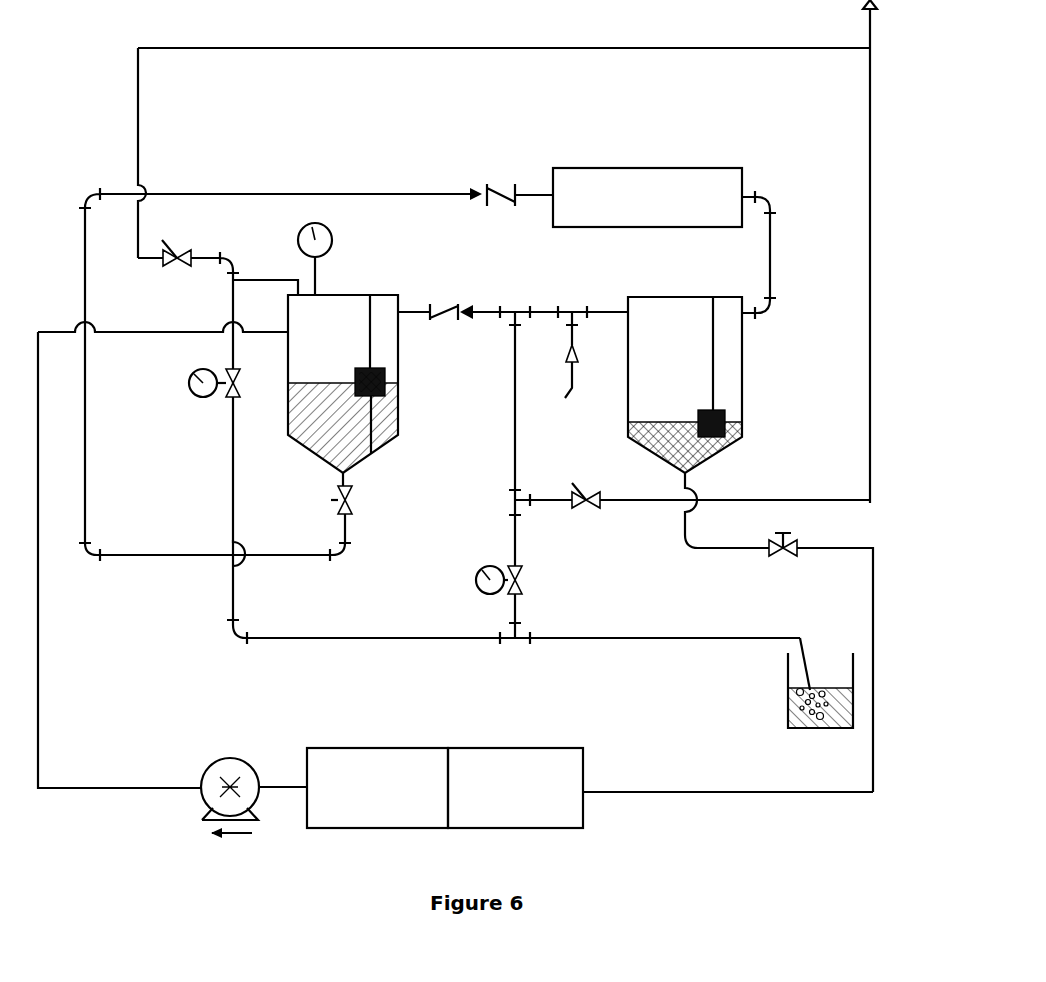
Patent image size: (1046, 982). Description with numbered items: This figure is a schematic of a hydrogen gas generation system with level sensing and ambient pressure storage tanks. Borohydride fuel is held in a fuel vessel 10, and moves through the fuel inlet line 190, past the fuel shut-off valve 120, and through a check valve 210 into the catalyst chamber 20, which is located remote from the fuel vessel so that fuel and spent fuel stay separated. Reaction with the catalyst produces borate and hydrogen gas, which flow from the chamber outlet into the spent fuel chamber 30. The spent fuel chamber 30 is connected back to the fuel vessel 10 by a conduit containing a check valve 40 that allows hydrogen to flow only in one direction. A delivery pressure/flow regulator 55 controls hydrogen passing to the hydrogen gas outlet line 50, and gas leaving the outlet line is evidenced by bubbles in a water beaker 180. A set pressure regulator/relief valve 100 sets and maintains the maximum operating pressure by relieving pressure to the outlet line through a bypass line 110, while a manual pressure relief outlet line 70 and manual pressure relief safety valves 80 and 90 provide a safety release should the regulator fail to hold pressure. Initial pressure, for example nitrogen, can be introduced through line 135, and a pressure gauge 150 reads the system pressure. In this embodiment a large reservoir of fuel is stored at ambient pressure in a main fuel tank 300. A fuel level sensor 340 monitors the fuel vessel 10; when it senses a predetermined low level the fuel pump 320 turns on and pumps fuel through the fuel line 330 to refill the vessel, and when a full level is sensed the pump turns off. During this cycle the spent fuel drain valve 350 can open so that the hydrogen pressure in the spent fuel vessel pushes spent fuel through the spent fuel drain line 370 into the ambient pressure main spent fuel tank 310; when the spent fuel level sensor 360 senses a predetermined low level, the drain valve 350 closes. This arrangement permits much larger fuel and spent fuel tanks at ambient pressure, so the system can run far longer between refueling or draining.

The fuel vessel 10 is at (408, 430).
The catalyst chamber 20 is at (628, 158).
The spent fuel chamber 30 is at (755, 370).
The check valve 40 is at (444, 298).
The hydrogen gas outlet line 50 is at (814, 648).
The delivery pressure/flow regulator 55 is at (530, 577).
The manual pressure relief outlet line 70 is at (856, 22).
The manual pressure relief safety valve 80 is at (192, 245).
The manual pressure relief safety valve 90 is at (594, 513).
The set pressure regulator/relief valve 100 is at (222, 407).
The bypass line 110 is at (438, 642).
The fuel shut-off valve 120 is at (362, 512).
The line 135 is at (560, 376).
The pressure gauge 150 is at (336, 232).
The water beaker 180 is at (778, 707).
The fuel inlet line 190 is at (188, 567).
The check valve 210 is at (502, 174).
The main fuel tank 300 is at (397, 744).
The ambient pressure main spent fuel tank 310 is at (562, 744).
The fuel pump 320 is at (242, 746).
The fuel line 330 is at (88, 768).
The fuel level sensor 340 is at (392, 377).
The spent fuel drain valve 350 is at (763, 562).
The spent fuel level sensor 360 is at (738, 406).
The spent fuel drain line 370 is at (756, 788).